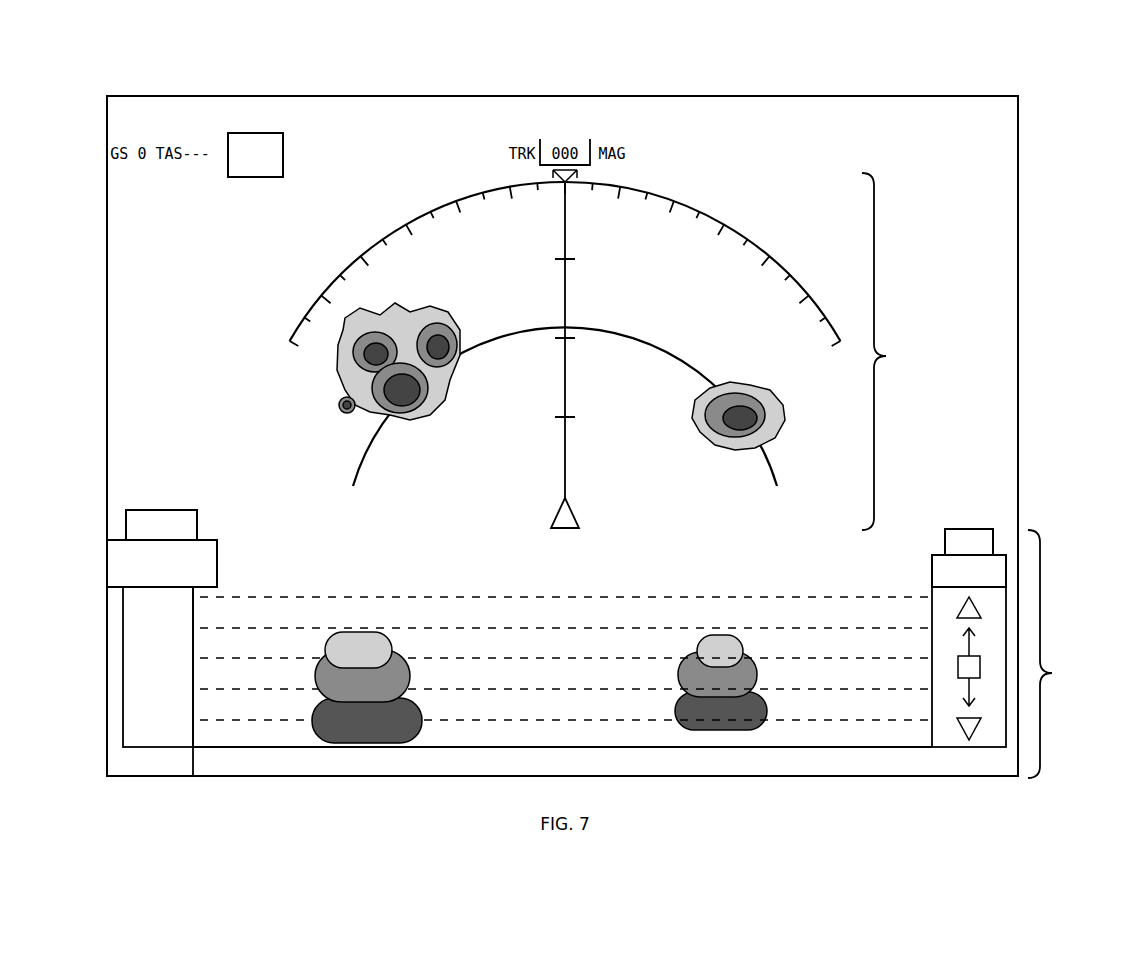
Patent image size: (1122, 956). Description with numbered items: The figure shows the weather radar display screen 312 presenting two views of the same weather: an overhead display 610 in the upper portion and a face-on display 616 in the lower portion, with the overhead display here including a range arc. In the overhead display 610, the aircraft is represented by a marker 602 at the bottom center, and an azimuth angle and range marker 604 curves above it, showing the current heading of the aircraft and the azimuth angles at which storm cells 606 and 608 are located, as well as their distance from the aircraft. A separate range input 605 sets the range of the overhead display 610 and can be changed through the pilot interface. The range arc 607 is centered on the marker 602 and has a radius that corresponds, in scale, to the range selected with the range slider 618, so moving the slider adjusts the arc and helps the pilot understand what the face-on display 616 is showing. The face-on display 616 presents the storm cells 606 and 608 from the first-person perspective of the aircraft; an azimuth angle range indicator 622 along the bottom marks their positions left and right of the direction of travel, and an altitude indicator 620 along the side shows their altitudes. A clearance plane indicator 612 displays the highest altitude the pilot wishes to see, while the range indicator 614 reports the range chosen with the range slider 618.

The weather radar display screen 312 is at (136, 74).
The marker 602 is at (558, 512).
The azimuth angle and range marker 604 is at (348, 262).
The range input 605 is at (250, 130).
The storm cell 606 is at (358, 638).
The range arc 607 is at (620, 302).
The storm cell 608 is at (710, 400).
The overhead display 610 is at (895, 351).
The clearance plane indicator 612 is at (193, 515).
The range indicator 614 is at (938, 560).
The face-on display 616 is at (1060, 654).
The range slider 618 is at (940, 645).
The altitude indicator 620 is at (183, 615).
The azimuth angle range indicator 622 is at (352, 768).